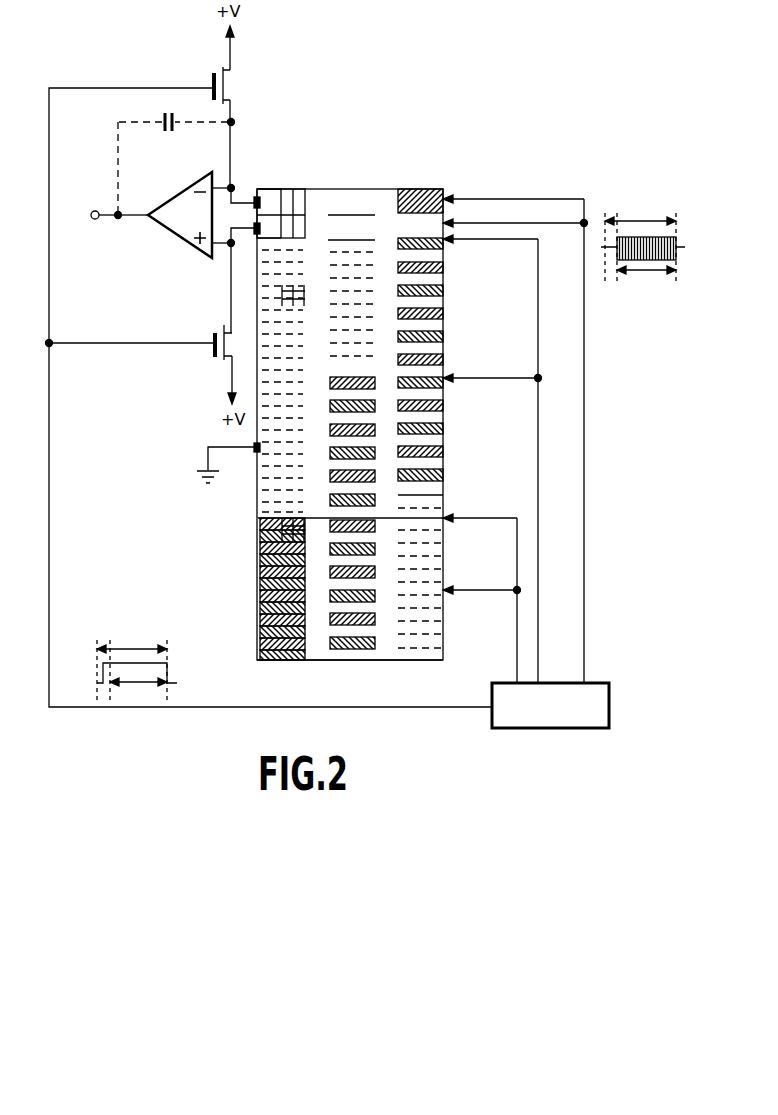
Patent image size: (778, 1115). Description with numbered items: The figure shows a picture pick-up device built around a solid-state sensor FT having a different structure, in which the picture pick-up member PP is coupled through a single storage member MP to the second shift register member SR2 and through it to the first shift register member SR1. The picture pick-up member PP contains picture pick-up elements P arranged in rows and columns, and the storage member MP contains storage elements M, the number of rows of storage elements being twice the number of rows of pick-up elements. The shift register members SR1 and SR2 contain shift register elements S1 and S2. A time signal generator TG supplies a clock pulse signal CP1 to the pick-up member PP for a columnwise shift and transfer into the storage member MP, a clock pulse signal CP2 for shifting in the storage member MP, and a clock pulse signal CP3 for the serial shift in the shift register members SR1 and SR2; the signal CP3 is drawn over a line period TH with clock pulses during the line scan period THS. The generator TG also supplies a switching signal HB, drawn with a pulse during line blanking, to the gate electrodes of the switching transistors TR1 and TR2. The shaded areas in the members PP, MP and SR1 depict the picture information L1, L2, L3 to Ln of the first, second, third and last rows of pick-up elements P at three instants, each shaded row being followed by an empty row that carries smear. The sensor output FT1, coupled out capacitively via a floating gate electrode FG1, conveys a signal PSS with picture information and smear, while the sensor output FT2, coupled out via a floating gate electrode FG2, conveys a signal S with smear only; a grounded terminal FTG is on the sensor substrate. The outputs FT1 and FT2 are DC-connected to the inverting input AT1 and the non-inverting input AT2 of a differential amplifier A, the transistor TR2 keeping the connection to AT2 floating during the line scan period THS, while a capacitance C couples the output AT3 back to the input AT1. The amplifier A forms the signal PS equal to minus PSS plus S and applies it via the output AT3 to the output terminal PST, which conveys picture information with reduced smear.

The switching transistor TR1 is at (231, 83).
The switching transistor TR2 is at (212, 352).
The signal with picture information and smear PSS is at (234, 124).
The capacitance C is at (166, 127).
The signal with picture information and reduced smear PS is at (114, 210).
The output terminal PST is at (97, 222).
The differential amplifier A is at (174, 206).
The inverting input AT1 is at (215, 178).
The non-inverting input AT2 is at (211, 260).
The output of the differential amplifier AT3 is at (151, 221).
The sensor output FT1 is at (256, 196).
The sensor output FT2 is at (255, 233).
The floating gate electrode FG1 is at (270, 190).
The floating gate electrode FG2 is at (262, 240).
The signal with smear only S is at (256, 298).
The shift register elements S1 is at (293, 192).
The shift register elements S2 is at (289, 232).
The storage elements M is at (304, 300).
The storage member MP is at (446, 322).
The picture pick-up elements P is at (304, 533).
The picture pick-up member PP is at (446, 548).
The picture information of the first row L1 is at (399, 207).
The picture information of the second row L2 is at (399, 243).
The picture information of the third row L3 is at (399, 267).
The picture information of the last row Ln is at (399, 478).
The grounded terminal FTG is at (257, 453).
The solid-state sensor FT is at (360, 663).
The first shift register member SR1 is at (446, 190).
The second shift register member SR2 is at (449, 221).
The clock pulse signal CP1 is at (517, 636).
The clock pulse signal CP2 is at (539, 654).
The clock pulse signal CP3 is at (614, 243).
The time signal generator TG is at (610, 708).
The line period TH is at (642, 220).
The line scan period THS is at (647, 272).
The switching signal HB is at (186, 707).